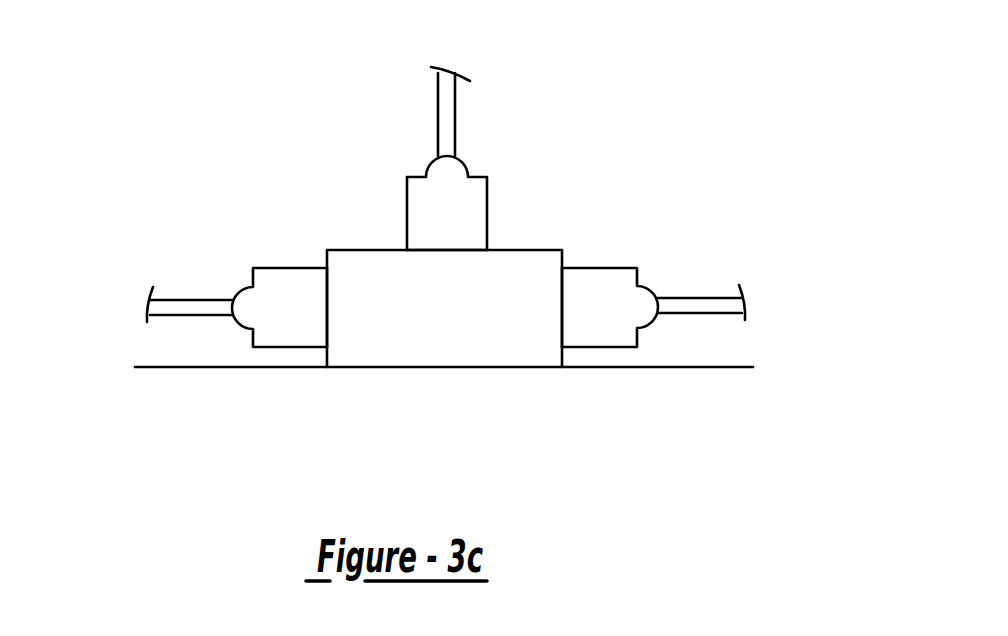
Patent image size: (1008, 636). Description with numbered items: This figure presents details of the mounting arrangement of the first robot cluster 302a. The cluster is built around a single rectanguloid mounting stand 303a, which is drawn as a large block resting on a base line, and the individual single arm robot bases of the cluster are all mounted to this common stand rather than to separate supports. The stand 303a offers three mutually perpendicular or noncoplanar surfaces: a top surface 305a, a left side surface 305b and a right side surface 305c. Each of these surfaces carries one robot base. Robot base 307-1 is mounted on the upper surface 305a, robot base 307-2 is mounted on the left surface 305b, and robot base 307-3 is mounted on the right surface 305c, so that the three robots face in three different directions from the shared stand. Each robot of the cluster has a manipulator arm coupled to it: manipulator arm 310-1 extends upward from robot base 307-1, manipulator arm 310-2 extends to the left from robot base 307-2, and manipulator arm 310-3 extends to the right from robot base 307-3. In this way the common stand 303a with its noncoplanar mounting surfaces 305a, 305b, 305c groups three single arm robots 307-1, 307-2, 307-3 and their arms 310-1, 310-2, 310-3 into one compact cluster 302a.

The robot cluster 302a is at (641, 158).
The mounting stand 303a is at (432, 335).
The mounting surface 305a is at (428, 250).
The mounting surface 305b is at (327, 312).
The mounting surface 305c is at (561, 323).
The robot base 307-1 is at (463, 157).
The robot base 307-2 is at (277, 267).
The robot base 307-3 is at (607, 267).
The manipulator arm 310-1 is at (437, 108).
The manipulator arm 310-2 is at (192, 298).
The manipulator arm 310-3 is at (683, 316).